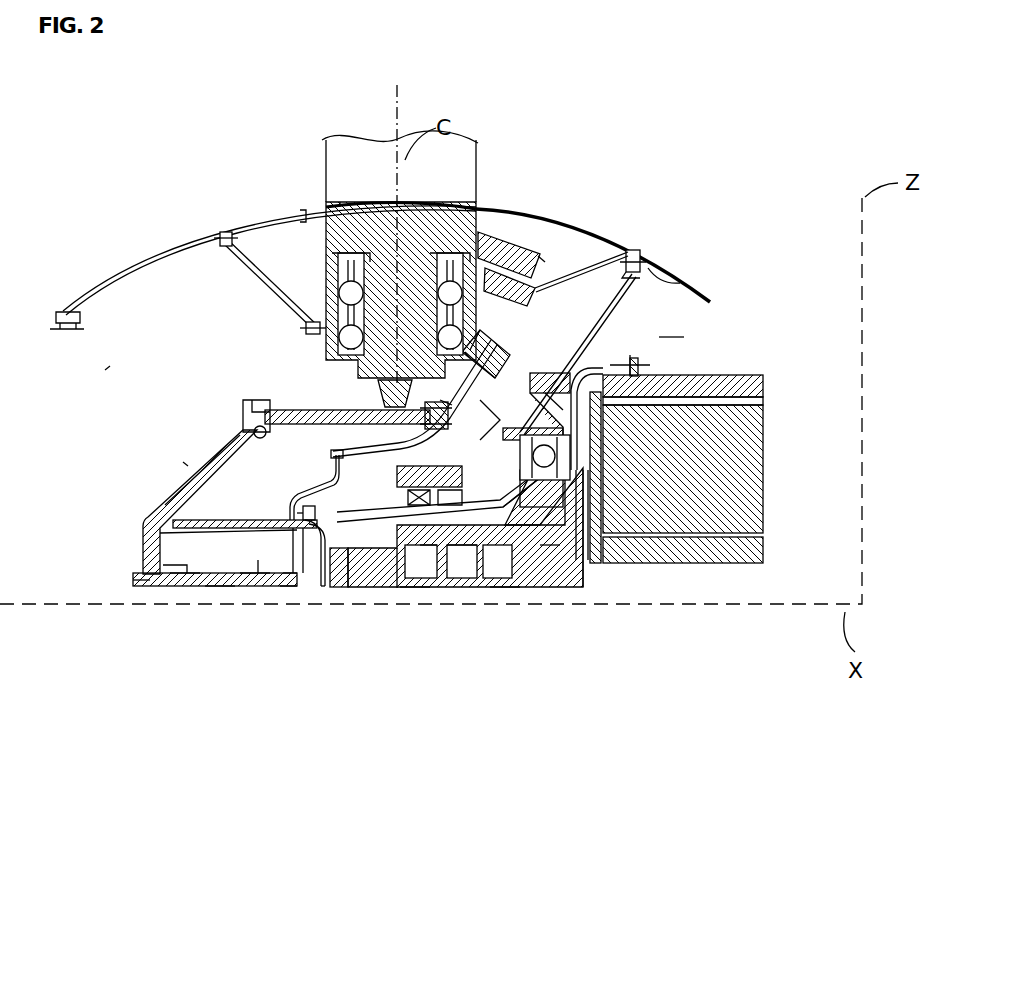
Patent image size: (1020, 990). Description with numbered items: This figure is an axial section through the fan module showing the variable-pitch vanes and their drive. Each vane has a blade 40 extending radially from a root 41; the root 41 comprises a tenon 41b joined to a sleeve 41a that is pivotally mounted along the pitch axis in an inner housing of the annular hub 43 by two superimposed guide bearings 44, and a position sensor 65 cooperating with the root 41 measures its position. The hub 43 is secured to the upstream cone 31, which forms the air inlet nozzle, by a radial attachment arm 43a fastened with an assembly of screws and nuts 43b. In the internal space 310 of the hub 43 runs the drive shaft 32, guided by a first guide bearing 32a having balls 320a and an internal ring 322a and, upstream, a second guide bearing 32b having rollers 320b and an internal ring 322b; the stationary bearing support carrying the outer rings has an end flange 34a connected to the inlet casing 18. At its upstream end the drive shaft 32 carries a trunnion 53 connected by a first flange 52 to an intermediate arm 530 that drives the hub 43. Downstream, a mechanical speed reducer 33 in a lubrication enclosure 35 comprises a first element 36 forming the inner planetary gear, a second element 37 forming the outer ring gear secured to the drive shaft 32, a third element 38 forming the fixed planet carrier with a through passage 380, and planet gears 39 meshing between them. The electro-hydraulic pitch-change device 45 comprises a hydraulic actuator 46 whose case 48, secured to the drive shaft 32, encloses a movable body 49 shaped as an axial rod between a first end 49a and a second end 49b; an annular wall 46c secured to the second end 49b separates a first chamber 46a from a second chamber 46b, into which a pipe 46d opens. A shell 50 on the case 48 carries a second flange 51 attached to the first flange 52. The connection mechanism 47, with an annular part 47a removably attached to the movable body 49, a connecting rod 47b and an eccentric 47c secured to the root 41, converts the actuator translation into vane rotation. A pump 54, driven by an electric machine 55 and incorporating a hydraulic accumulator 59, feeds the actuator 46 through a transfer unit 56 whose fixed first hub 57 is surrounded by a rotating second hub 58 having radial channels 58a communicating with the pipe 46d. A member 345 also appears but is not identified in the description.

The inlet casing 18 is at (700, 290).
The cone 31 is at (115, 280).
The internal space 310 is at (108, 368).
The drive shaft 32 is at (427, 603).
The first guide bearing 32a is at (583, 603).
The second guide bearing 32b is at (460, 497).
The balls 320a is at (543, 603).
The rollers 320b is at (383, 603).
The internal ring 322a is at (608, 567).
The internal ring 322b is at (412, 603).
The mechanical speed reducer 33 is at (772, 432).
The end flange 34a is at (630, 253).
The strut 345 is at (568, 390).
The lubrication enclosure 35 is at (671, 324).
The first element 36 is at (598, 300).
The second element 37 is at (765, 393).
The third element 38 is at (600, 376).
The passage 380 is at (610, 488).
The planet gears 39 is at (670, 503).
The blade 40 is at (462, 158).
The root 41 is at (482, 194).
The sleeve 41a is at (326, 250).
The tenon 41b is at (358, 200).
The hub 43 is at (326, 285).
The attachment arm 43a is at (255, 268).
The assembly of screws and nuts 43b is at (224, 234).
The guide bearings 44 is at (480, 238).
The pitch-change device 45 is at (183, 462).
The hydraulic actuator 46 is at (160, 590).
The first chamber 46a is at (303, 590).
The second chamber 46b is at (195, 590).
The annular wall 46c is at (250, 590).
The pipe 46d is at (212, 517).
The connection mechanism 47 is at (148, 510).
The annular part 47a is at (215, 447).
The connecting rod 47b is at (258, 410).
The eccentric 47c is at (491, 340).
The case 48 is at (240, 517).
The movable body 49 is at (220, 590).
The first end 49a is at (150, 590).
The second end 49b is at (297, 590).
The shell 50 is at (317, 497).
The second flange 51 is at (322, 410).
The first flange 52 is at (300, 516).
The trunnion 53 is at (353, 420).
The intermediate arm 530 is at (500, 400).
The pump 54 is at (463, 603).
The electric machine 55 is at (495, 590).
The transfer unit 56 is at (350, 598).
The first hub 57 is at (395, 603).
The second hub 58 is at (300, 527).
The channels 58a is at (313, 590).
The hydraulic accumulator 59 is at (418, 603).
The sensor 65 is at (548, 260).